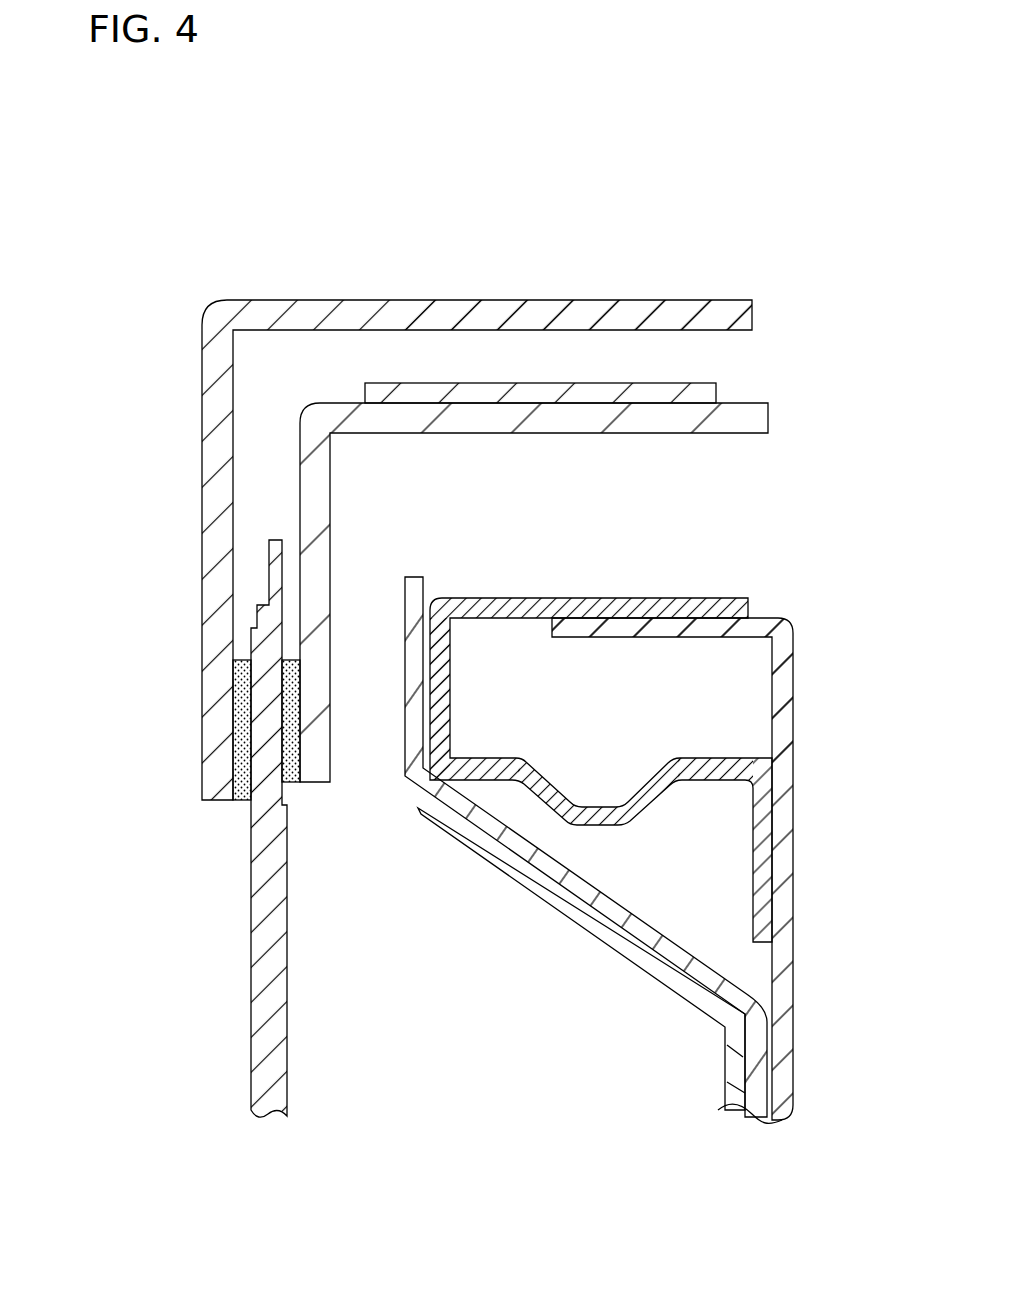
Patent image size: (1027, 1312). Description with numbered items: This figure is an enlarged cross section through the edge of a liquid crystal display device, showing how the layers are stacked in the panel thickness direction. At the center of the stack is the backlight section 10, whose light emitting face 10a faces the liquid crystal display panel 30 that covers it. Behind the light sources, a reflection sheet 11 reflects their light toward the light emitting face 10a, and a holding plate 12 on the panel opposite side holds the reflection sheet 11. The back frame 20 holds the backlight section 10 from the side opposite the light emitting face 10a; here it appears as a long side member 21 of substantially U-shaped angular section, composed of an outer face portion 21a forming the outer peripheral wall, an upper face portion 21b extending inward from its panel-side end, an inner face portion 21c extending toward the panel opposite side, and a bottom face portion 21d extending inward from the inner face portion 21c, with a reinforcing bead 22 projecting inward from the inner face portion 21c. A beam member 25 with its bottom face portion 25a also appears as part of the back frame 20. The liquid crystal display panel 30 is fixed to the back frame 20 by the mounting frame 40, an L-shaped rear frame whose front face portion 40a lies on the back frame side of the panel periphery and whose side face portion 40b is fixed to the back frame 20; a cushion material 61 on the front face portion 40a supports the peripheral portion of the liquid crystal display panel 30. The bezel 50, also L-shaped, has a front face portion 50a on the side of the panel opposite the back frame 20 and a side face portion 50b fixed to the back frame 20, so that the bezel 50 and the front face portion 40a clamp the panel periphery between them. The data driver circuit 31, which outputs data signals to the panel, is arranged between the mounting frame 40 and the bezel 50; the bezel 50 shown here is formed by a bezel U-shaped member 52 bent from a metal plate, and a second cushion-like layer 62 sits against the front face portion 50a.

The backlight section 10 is at (560, 1043).
The light emitting face 10a is at (394, 991).
The reflection sheet 11 is at (722, 1106).
The holding plate 12 is at (757, 995).
The back frame 20 is at (585, 825).
The long side member 21 is at (554, 731).
The outer face portion 21a is at (653, 598).
The upper face portion 21b is at (430, 679).
The inner face portion 21c is at (695, 782).
The bottom face portion 21d is at (753, 900).
The reinforcing bead 22 is at (607, 826).
The beam member 25 is at (727, 870).
The bottom face portion 25a is at (795, 722).
The liquid crystal display panel 30 is at (251, 1018).
The data driver circuit 31 is at (650, 383).
The mounting frame 40 is at (391, 578).
The front face portion 40a is at (300, 482).
The side face portion 40b is at (408, 400).
The bezel 50 is at (452, 473).
The front face portion 50a is at (202, 387).
The side face portion 50b is at (285, 300).
The bezel U-shaped member 52 is at (548, 300).
The cushion material 61 is at (290, 783).
The adhesive layer 62 is at (242, 802).